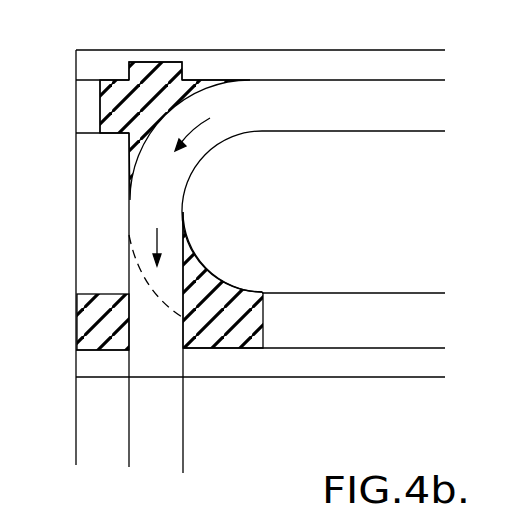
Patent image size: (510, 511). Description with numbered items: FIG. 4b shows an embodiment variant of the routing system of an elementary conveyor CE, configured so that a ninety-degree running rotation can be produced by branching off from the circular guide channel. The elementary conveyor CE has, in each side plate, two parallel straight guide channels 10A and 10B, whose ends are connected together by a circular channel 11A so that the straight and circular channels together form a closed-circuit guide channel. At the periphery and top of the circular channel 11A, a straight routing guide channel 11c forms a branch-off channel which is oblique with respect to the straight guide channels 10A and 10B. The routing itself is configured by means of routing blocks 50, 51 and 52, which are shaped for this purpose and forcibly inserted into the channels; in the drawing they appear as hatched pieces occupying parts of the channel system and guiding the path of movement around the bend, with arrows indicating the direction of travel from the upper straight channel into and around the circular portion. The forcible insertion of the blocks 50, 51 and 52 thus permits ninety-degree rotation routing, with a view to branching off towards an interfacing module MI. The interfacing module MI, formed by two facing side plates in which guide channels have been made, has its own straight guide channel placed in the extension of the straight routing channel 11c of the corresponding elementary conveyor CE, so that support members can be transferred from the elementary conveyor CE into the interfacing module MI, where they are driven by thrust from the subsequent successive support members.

The straight guide channel 10A is at (385, 108).
The straight guide channel 10B is at (325, 328).
The straight routing guide channel 11c is at (138, 57).
The circular channel 11A is at (150, 212).
The elementary conveyor CE is at (300, 67).
The routing block 50 is at (155, 90).
The routing block 51 is at (227, 290).
The routing block 52 is at (97, 316).
The interfacing module MI is at (108, 426).